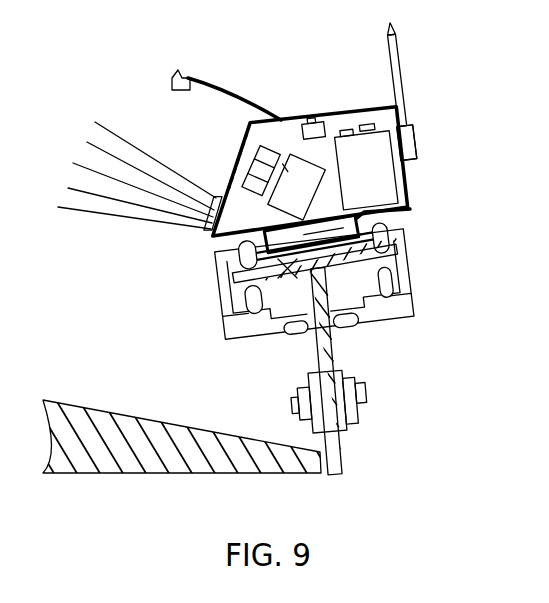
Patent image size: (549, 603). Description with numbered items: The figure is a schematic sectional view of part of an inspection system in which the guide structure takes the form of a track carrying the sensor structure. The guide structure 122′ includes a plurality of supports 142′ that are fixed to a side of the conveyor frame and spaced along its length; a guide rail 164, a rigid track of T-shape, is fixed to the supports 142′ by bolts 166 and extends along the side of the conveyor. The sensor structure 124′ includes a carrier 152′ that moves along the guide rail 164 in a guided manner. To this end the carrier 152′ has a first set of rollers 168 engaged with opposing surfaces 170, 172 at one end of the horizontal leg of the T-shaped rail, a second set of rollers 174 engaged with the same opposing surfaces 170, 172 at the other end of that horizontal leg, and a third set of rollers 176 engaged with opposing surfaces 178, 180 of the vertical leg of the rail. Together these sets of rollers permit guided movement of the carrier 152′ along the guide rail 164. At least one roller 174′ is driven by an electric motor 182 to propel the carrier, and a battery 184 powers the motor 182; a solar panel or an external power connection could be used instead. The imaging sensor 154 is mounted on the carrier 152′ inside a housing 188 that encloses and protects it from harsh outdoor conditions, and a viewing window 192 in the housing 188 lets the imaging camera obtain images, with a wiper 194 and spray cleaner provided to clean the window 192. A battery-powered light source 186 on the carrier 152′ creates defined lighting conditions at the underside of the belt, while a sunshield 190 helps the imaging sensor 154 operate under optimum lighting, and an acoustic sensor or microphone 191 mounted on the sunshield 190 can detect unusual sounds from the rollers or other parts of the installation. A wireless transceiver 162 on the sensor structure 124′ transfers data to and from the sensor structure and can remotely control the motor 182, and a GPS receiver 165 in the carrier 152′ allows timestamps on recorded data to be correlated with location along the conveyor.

The guide structure 122′ is at (342, 452).
The sensor structure 124′ is at (433, 118).
The support 142′ is at (115, 423).
The carrier 152′ is at (410, 176).
The imaging sensor 154 is at (273, 150).
The wireless transceiver 162 is at (396, 52).
The guide rail 164 is at (351, 402).
The GPS receiver 165 is at (318, 120).
The bolt 166 is at (352, 420).
The first set of rollers 168 is at (246, 262).
The opposing surface 170 is at (298, 277).
The opposing surface 172 is at (400, 300).
The second set of rollers 174 is at (389, 283).
The driven roller 174′ is at (385, 238).
The third set of rollers 176 is at (290, 329).
The opposing surface 178 is at (303, 374).
The opposing surface 180 is at (334, 358).
The electric motor 182 is at (397, 206).
The battery 184 is at (377, 147).
The light source 186 is at (209, 234).
The housing 188 is at (345, 130).
The sunshield 190 is at (202, 80).
The acoustic sensor 191 is at (176, 72).
The viewing window 192 is at (250, 186).
The wiper 194 is at (246, 140).